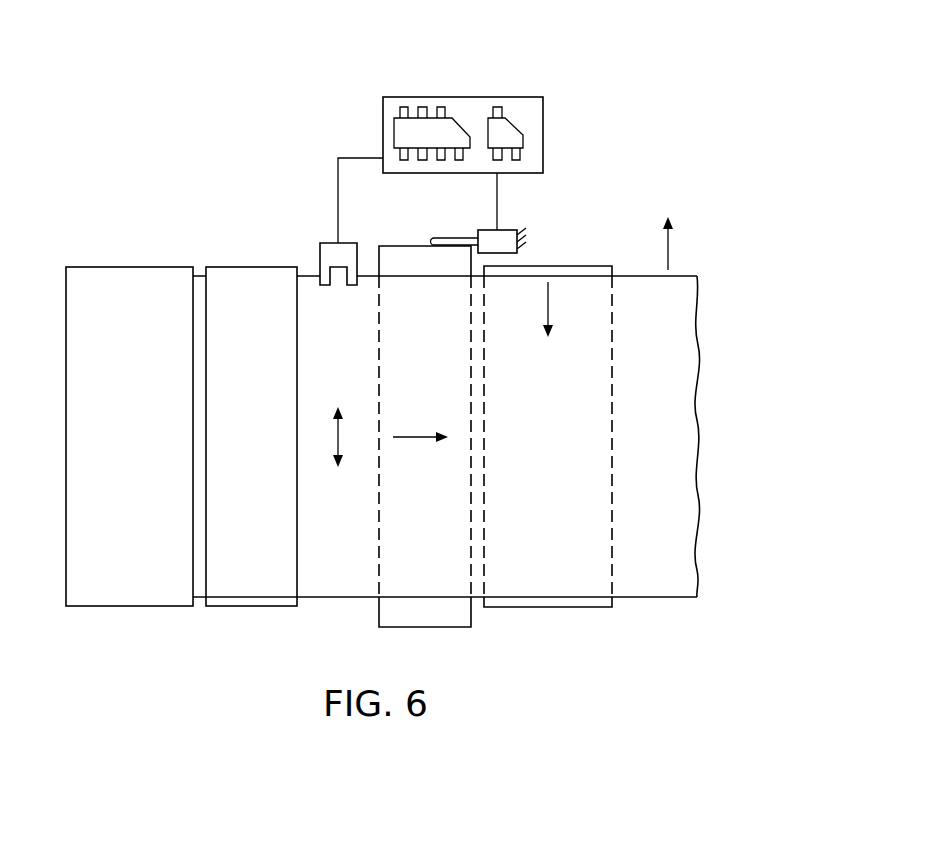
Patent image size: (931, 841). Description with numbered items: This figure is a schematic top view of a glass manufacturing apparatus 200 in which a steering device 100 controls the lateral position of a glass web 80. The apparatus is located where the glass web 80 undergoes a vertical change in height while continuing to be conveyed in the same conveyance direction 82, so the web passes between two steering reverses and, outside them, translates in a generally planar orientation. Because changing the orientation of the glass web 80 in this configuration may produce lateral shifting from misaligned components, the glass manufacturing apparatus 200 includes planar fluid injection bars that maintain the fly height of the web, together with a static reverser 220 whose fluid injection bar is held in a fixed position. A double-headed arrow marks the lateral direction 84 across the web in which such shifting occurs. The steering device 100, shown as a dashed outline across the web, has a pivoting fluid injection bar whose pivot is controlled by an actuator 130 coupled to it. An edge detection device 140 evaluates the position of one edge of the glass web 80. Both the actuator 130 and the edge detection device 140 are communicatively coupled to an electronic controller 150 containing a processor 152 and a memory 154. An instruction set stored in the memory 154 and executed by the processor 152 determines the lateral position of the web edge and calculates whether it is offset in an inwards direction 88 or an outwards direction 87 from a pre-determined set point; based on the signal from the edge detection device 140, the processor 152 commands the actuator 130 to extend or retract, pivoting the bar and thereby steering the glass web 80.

The glass web 80 is at (697, 272).
The conveyance direction 82 is at (417, 438).
The cross-process direction 84 is at (340, 423).
The outwards direction 87 is at (668, 242).
The inwards direction 88 is at (547, 308).
The steering device 100 is at (462, 640).
The actuator 130 is at (508, 230).
The edge detection device 140 is at (318, 226).
The electronic controller 150 is at (493, 108).
The processor 152 is at (394, 138).
The memory 154 is at (523, 138).
The glass manufacturing apparatus 200 is at (686, 163).
The static reverser 220 is at (255, 266).